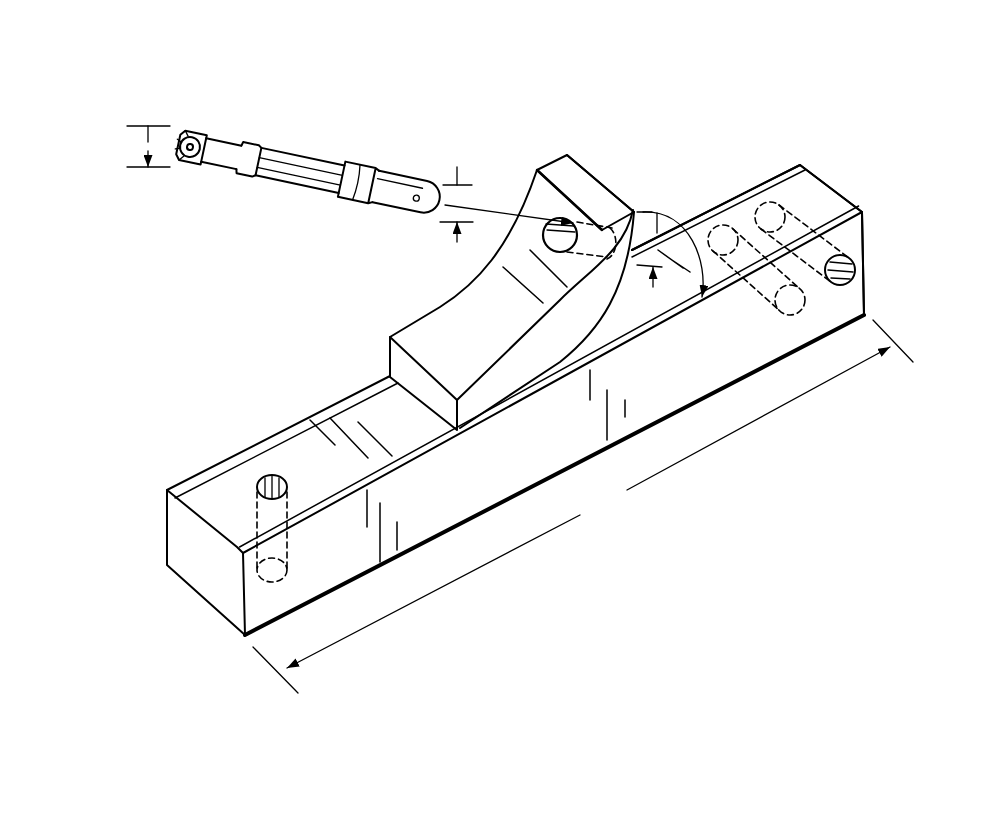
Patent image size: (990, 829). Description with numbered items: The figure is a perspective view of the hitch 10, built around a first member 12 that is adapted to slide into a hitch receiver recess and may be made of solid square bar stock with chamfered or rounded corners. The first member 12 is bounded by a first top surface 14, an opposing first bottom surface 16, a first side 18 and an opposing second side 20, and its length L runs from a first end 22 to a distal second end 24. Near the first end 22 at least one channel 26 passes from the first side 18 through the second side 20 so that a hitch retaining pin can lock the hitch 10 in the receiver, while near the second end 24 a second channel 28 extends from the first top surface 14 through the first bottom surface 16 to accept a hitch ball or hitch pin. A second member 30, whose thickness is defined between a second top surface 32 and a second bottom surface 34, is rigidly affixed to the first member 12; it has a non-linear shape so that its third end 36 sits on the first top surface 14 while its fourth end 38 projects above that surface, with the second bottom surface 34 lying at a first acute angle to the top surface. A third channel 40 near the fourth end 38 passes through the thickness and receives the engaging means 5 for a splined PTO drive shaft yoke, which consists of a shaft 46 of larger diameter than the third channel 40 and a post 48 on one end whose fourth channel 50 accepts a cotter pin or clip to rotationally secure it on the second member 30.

The tool 5 is at (191, 121).
The hitch 10 is at (835, 76).
The first member 12 is at (758, 166).
The first top surface 14 is at (820, 200).
The first bottom surface 16 is at (852, 320).
The first side 18 is at (858, 270).
The second side 20 is at (785, 167).
The first end 22 is at (858, 212).
The second end 24 is at (200, 567).
The channel 26 is at (810, 299).
The second channel 28 is at (268, 480).
The second member 30 is at (387, 320).
The second top surface 32 is at (452, 337).
The second bottom surface 34 is at (607, 184).
The third end 36 is at (390, 350).
The fourth end 38 is at (567, 176).
The third channel 40 is at (557, 230).
The shaft 46 is at (310, 192).
The post 48 is at (383, 172).
The fourth channel 50 is at (420, 190).